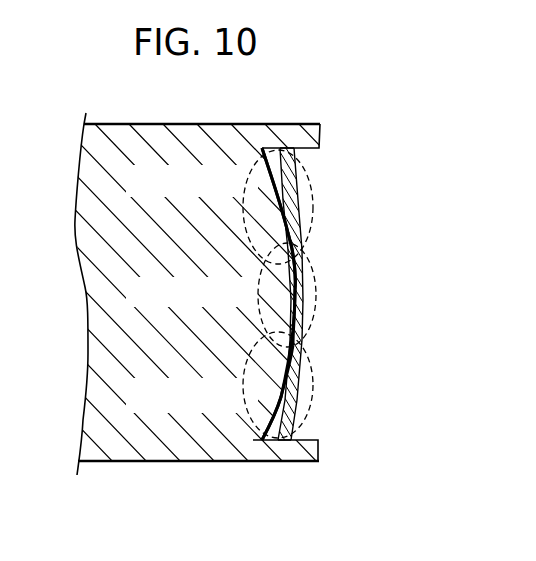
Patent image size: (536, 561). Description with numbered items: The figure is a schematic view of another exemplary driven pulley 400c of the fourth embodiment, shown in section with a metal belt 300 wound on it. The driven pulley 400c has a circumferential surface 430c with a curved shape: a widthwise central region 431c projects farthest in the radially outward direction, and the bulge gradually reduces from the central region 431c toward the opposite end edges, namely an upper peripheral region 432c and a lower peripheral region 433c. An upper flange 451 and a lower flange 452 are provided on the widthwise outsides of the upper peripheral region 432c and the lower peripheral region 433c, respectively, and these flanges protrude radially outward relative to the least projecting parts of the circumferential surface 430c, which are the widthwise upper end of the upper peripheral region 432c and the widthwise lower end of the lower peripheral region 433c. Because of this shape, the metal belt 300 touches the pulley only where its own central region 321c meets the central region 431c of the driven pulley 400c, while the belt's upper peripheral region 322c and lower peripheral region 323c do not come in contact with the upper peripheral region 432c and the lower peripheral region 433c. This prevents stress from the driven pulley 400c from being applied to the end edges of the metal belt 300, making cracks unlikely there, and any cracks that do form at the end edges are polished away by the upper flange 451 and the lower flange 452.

The driven pulley 400c is at (115, 445).
The upper flange 451 is at (320, 132).
The lower flange 452 is at (318, 450).
The circumferential surface 430c is at (305, 244).
The metal belt 300 is at (300, 328).
The central region of the metal belt 321c is at (316, 292).
The upper peripheral region of the metal belt 322c is at (318, 192).
The lower peripheral region of the metal belt 323c is at (315, 395).
The central region of the circumferential surface 431c is at (258, 282).
The upper peripheral region of the circumferential surface 432c is at (243, 187).
The lower peripheral region of the circumferential surface 433c is at (255, 388).